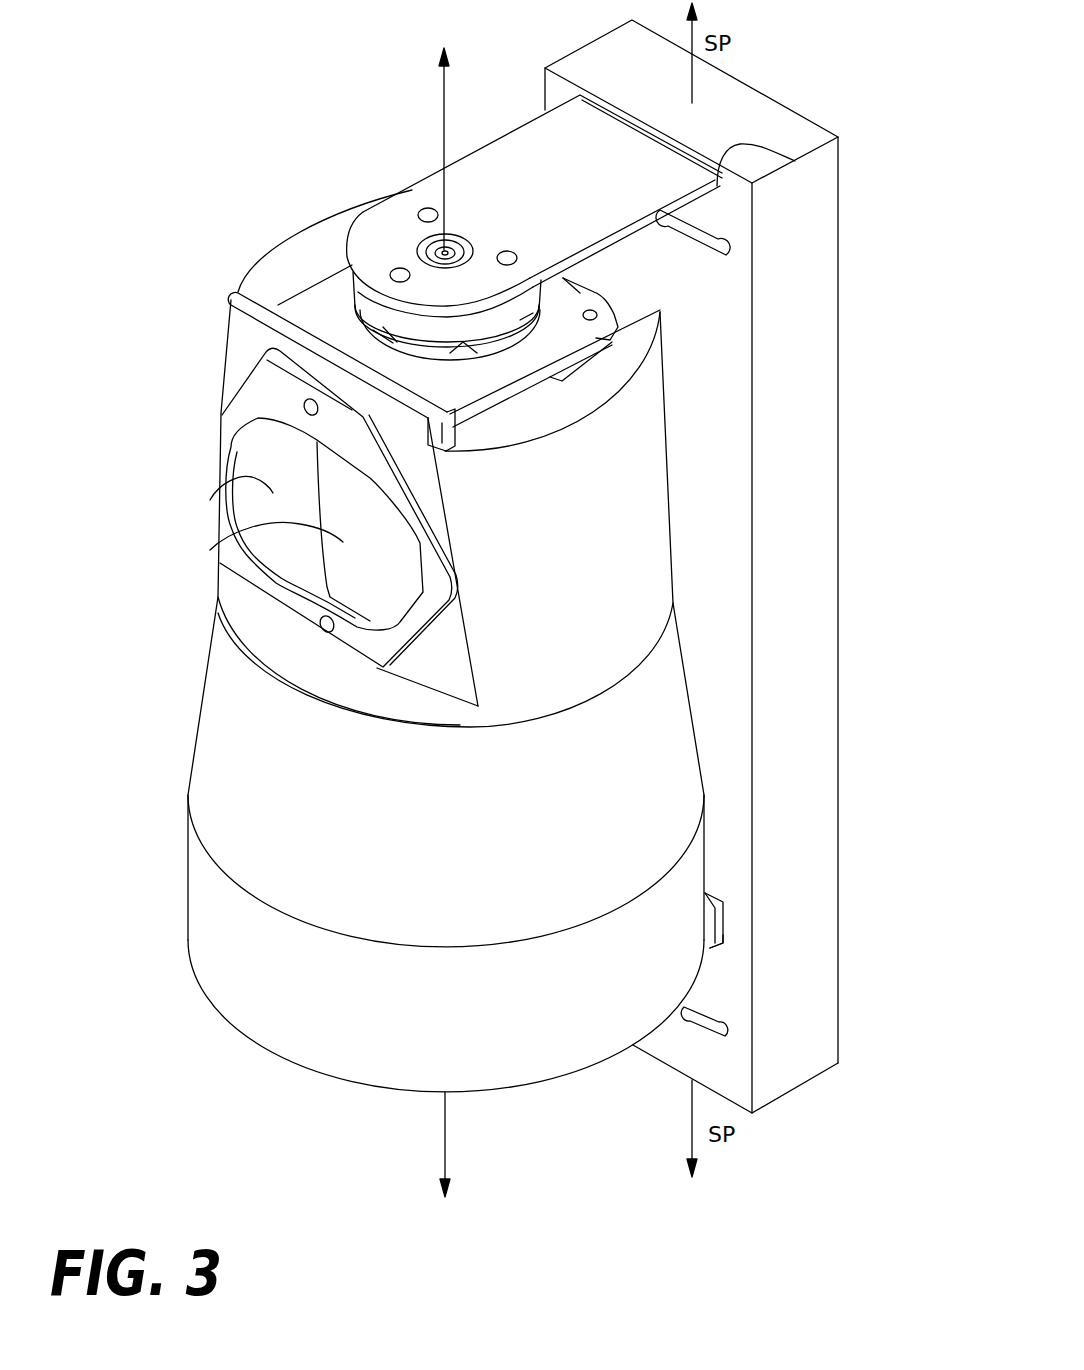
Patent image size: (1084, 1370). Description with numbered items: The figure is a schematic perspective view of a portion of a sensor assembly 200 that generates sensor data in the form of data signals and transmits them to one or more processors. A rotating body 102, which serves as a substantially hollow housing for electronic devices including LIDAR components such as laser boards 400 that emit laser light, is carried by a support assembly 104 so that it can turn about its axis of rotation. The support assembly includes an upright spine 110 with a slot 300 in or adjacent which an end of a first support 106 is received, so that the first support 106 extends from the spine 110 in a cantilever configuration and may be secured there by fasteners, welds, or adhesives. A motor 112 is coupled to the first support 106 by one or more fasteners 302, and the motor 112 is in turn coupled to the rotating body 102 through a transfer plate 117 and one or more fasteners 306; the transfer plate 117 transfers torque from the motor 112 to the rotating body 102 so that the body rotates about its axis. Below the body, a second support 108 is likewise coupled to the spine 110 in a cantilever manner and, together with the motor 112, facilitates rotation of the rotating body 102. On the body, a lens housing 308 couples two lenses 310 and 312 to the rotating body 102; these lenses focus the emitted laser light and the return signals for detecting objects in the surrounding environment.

The sensor assembly 200 is at (127, 88).
The rotating body 102 is at (210, 745).
The support assembly 104 is at (885, 398).
The first support 106 is at (572, 185).
The second support 108 is at (713, 928).
The spine 110 is at (824, 293).
The motor 112 is at (368, 307).
The transfer plate 117 is at (612, 341).
The slot 300 is at (837, 168).
The fasteners 302 is at (512, 253).
The fasteners 306 is at (602, 297).
The lens housing 308 is at (252, 386).
The lens 310 is at (272, 490).
The lens 312 is at (348, 535).
The laser boards 400 is at (710, 947).